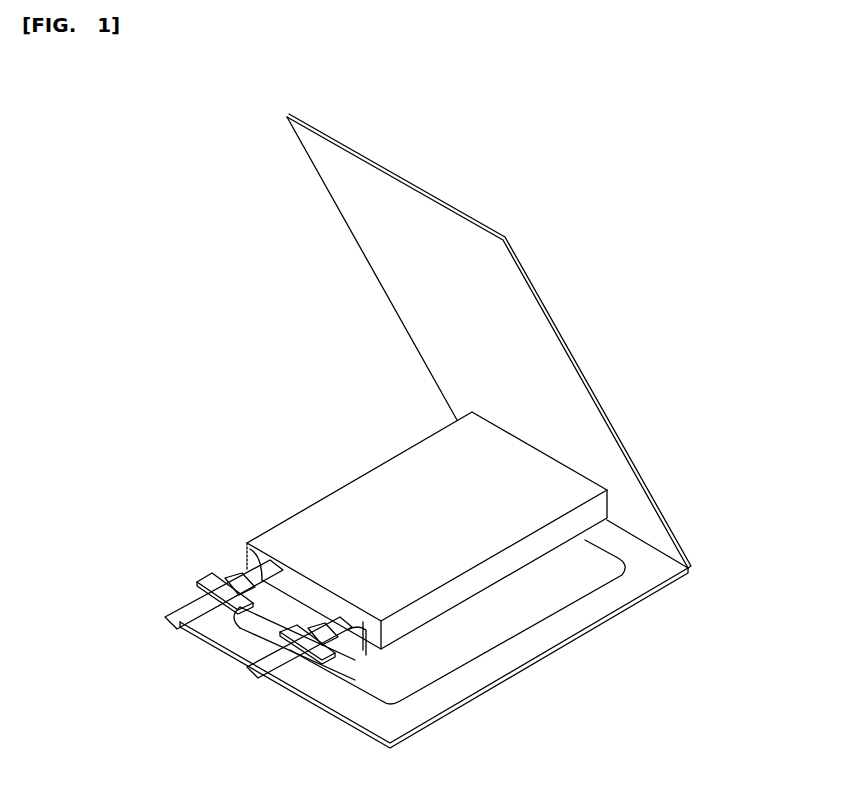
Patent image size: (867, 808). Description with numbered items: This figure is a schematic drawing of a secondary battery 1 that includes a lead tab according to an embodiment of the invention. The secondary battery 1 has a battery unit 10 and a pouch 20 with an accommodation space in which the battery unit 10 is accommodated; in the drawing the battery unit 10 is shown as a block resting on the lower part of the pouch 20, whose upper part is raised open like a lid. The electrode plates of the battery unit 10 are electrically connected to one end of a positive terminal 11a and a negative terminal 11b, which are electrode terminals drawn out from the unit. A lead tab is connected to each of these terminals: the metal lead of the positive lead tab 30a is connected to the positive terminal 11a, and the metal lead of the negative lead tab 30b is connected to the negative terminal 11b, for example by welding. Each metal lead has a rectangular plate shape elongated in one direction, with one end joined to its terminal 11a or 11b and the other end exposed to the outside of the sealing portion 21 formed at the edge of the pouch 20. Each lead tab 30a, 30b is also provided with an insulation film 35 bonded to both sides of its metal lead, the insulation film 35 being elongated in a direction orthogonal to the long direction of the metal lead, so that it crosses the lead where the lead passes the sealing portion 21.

The secondary battery 1 is at (211, 210).
The battery unit 10 is at (345, 469).
The positive terminal 11a is at (244, 572).
The negative terminal 11b is at (340, 632).
The pouch 20 is at (648, 443).
The sealing portion 21 is at (512, 665).
The positive lead tab 30a is at (166, 626).
The negative lead tab 30b is at (250, 678).
The insulation film 35 is at (205, 576).